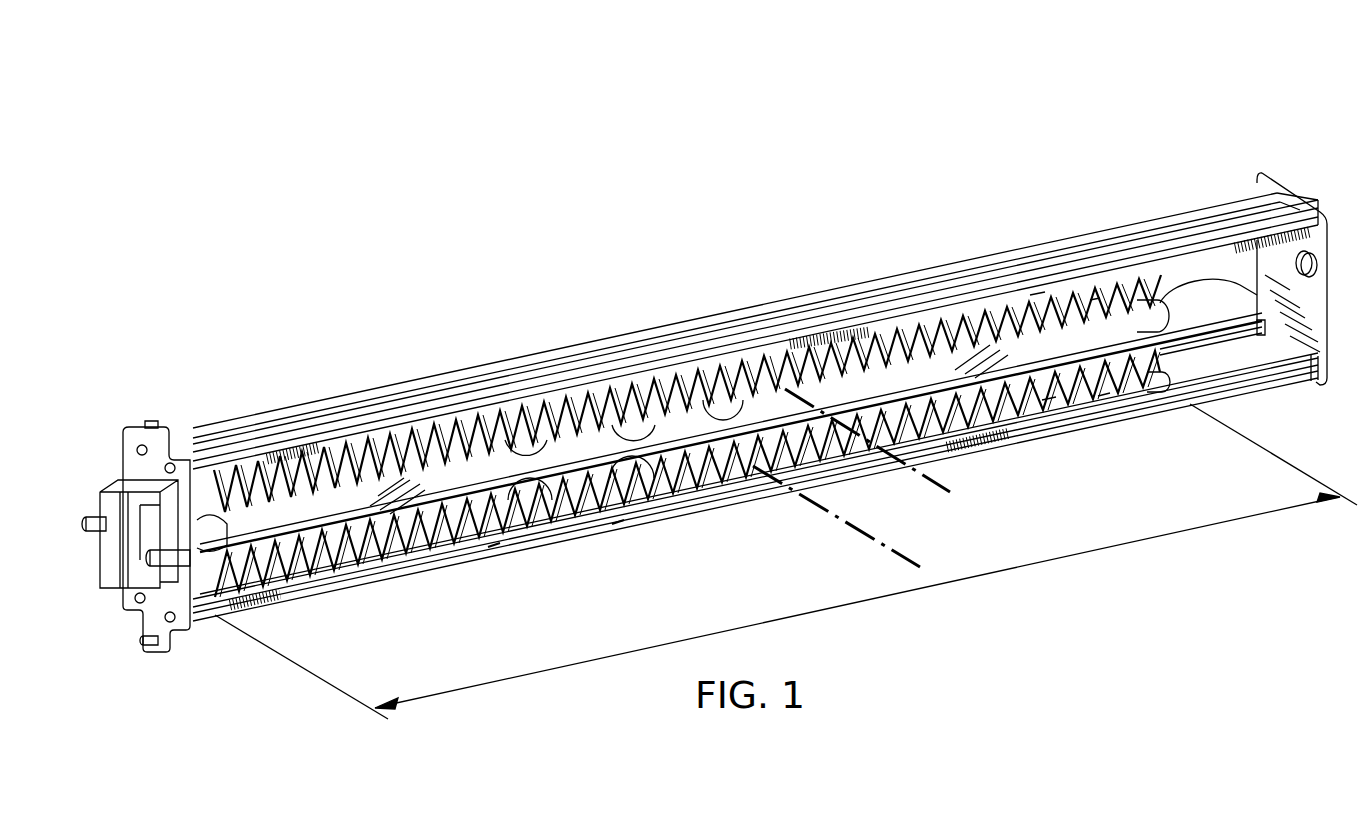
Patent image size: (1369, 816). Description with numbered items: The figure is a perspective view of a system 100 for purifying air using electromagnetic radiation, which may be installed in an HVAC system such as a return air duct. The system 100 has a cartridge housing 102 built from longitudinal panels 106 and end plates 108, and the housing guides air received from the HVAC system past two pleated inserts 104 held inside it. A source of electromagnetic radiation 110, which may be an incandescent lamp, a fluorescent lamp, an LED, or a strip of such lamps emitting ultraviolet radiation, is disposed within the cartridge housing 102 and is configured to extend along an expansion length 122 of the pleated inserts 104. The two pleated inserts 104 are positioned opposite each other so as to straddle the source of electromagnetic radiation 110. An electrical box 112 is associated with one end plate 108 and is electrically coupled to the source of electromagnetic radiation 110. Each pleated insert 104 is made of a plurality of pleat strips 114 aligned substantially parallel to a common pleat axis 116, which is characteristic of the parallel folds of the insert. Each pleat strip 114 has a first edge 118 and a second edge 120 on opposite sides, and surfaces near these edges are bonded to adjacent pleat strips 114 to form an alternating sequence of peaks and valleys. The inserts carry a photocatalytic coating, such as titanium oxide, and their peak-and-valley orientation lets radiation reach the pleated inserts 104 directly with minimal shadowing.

The system 100 is at (408, 132).
The cartridge housing 102 is at (243, 417).
The pleated insert 104 is at (1192, 285).
The longitudinal panels 106 is at (320, 425).
The end plates 108 is at (122, 458).
The source of electromagnetic radiation 110 is at (1162, 303).
The electrical box 112 is at (122, 553).
The pleat strips 114 is at (1035, 295).
The common pleat axis 116 is at (936, 489).
The first edge 118 is at (533, 417).
The second edge 120 is at (496, 545).
The expansion length 122 is at (860, 612).